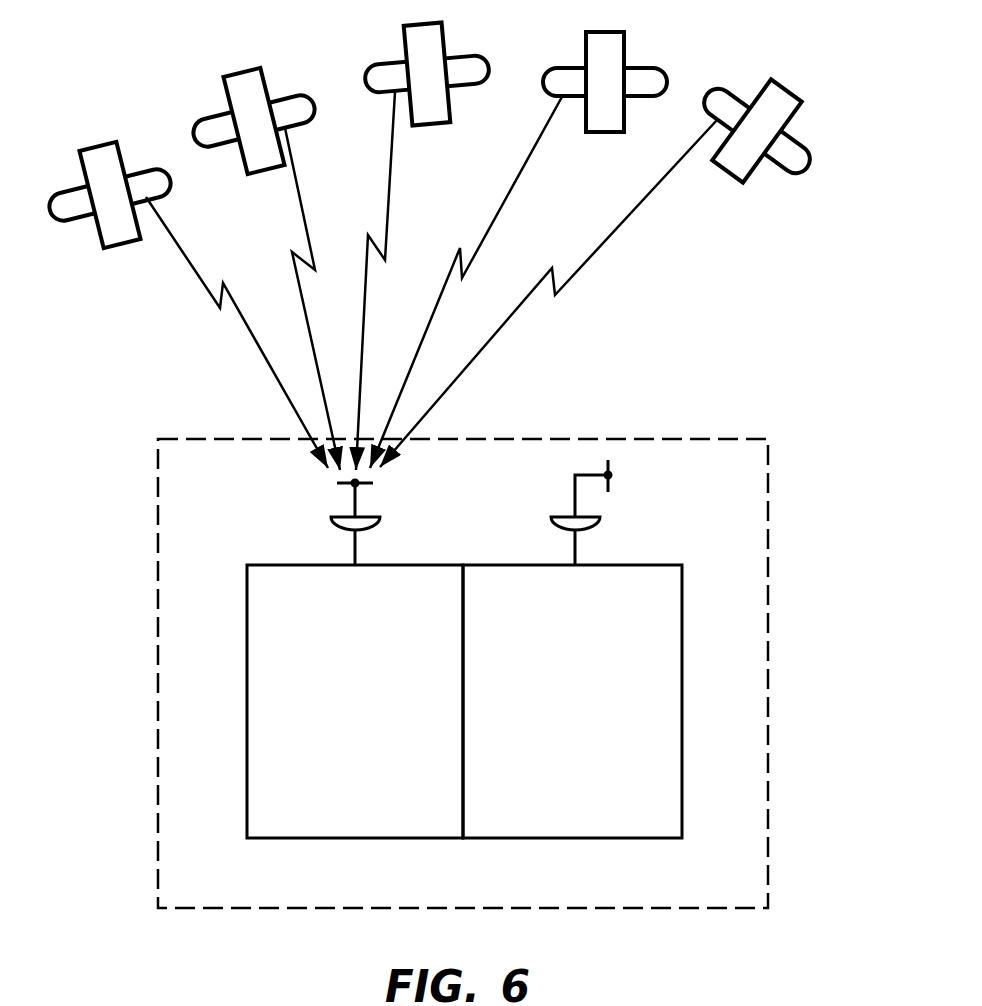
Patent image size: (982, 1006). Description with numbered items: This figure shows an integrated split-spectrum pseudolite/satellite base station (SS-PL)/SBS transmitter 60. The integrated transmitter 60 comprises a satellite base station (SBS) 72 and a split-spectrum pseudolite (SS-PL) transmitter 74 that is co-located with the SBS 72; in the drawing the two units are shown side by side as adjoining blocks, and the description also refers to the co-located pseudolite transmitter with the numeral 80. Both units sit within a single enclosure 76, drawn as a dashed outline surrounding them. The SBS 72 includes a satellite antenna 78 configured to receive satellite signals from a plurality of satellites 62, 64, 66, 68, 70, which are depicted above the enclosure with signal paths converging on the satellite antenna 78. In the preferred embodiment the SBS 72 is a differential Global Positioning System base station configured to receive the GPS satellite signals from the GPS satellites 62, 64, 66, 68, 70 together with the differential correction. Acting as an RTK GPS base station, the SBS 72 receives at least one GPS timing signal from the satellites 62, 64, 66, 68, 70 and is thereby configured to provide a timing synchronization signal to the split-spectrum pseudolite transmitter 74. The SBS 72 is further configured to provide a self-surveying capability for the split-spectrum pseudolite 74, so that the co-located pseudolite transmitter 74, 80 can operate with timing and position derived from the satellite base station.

The integrated split-spectrum pseudolite/satellite base station (SS-PL)/SBS transmit 60 is at (624, 942).
The satellite 62 is at (123, 160).
The satellite 64 is at (270, 88).
The satellite 66 is at (445, 40).
The satellite 68 is at (627, 53).
The satellite 70 is at (800, 105).
The satellite base station (SBS) 72 is at (247, 681).
The split-spectrum pseudolite (SS-PL) transmitter 74 is at (682, 692).
The ground station enclosure 76 is at (672, 438).
The satellite antenna 78 is at (372, 528).
The split-spectrum pseudolite (SS-PL) transmitter 80 is at (592, 528).